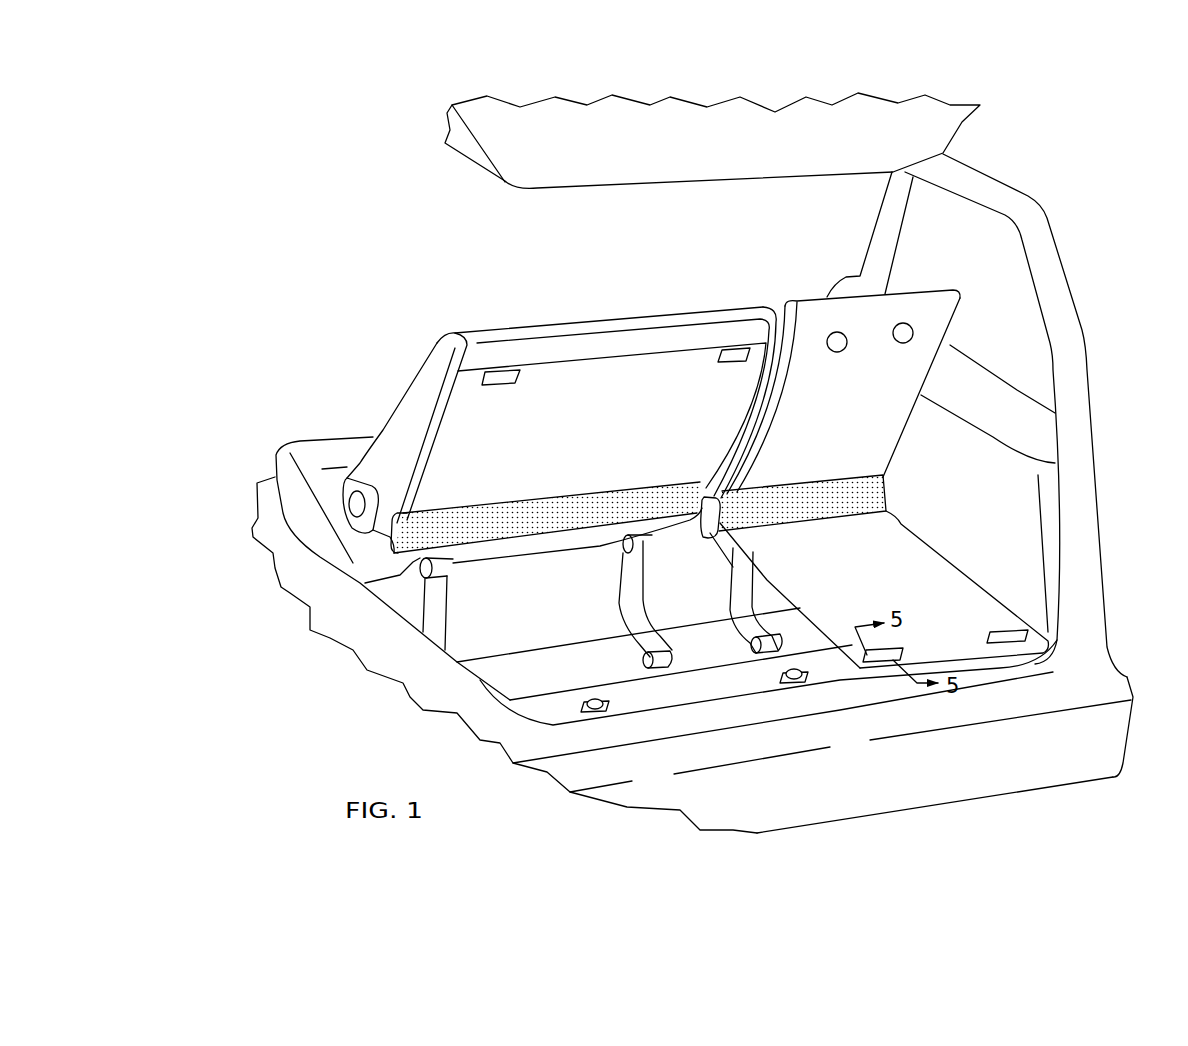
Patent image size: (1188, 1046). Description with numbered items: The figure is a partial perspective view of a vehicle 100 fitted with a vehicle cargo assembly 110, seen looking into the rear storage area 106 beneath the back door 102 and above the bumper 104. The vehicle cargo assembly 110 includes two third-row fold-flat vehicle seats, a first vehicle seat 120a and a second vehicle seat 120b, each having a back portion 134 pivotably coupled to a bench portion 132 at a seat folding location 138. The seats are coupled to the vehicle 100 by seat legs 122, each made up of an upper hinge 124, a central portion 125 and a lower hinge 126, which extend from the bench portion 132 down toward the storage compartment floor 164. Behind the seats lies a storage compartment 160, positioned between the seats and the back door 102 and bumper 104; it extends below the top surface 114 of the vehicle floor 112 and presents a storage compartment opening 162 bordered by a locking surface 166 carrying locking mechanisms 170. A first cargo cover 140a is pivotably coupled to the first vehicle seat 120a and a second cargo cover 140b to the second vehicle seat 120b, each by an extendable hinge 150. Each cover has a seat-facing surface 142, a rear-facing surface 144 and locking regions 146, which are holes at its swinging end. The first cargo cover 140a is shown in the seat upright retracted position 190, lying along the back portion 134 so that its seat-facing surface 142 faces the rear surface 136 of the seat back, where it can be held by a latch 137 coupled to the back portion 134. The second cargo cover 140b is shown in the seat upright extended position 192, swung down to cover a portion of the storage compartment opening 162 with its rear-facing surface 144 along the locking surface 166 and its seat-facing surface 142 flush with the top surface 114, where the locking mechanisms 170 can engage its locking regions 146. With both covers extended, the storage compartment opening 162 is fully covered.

The vehicle 100 is at (1130, 236).
The back door 102 is at (965, 122).
The bumper 104 is at (1122, 745).
The rear storage area 106 is at (1020, 492).
The vehicle cargo assembly 110 is at (283, 652).
The vehicle floor 112 is at (258, 522).
The top surface 114 is at (353, 632).
The first vehicle seat 120a is at (506, 312).
The second vehicle seat 120b is at (845, 273).
The seat legs 122 is at (628, 600).
The upper hinge 124 is at (615, 551).
The central portion 125 is at (643, 572).
The lower hinge 126 is at (670, 650).
The bench portion 132 is at (313, 443).
The back portion 134 is at (587, 325).
The rear surface 136 is at (862, 424).
The latch 137 is at (833, 352).
The seat folding location 138 is at (357, 507).
The first cargo cover 140a is at (467, 414).
The second cargo cover 140b is at (906, 543).
The seat-facing surface 142 is at (897, 591).
The rear-facing surface 144 is at (633, 430).
The locking regions 146 is at (510, 378).
The extendable hinge 150 is at (597, 498).
The storage compartment 160 is at (480, 663).
The storage compartment opening 162 is at (506, 682).
The storage compartment floor 164 is at (732, 662).
The locking surface 166 is at (610, 690).
The locking mechanisms 170 is at (608, 712).
The seat upright retracted position 190 is at (513, 487).
The seat upright extended position 192 is at (961, 588).